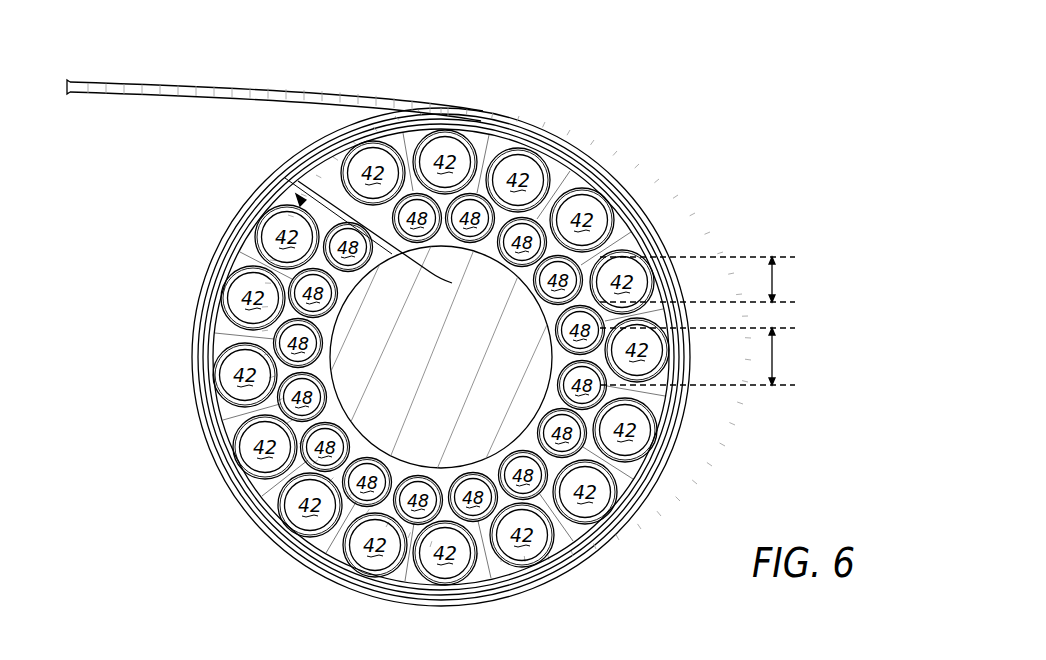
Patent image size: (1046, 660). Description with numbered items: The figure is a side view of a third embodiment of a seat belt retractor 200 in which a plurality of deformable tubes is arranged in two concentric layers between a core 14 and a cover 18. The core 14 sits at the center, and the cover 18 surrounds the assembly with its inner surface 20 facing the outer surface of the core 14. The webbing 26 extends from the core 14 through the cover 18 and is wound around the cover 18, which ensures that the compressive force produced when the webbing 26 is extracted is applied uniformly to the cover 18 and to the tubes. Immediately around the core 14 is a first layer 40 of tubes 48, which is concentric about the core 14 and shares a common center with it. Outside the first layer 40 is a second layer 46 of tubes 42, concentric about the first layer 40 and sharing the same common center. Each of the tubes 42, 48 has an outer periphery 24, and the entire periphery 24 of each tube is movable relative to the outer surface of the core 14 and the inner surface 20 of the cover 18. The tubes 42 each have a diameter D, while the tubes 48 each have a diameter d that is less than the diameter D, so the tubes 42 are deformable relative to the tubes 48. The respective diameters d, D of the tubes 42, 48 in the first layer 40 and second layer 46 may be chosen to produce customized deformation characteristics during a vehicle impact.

The seat belt retractor 200 is at (748, 97).
The core 14 is at (432, 368).
The cover 18 is at (367, 131).
The inner surface 20 is at (393, 136).
The outer periphery 24 is at (343, 165).
The webbing 26 is at (148, 85).
The first layer 40 is at (388, 238).
The tubes 42 is at (441, 357).
The second layer 46 is at (304, 198).
The tubes 48 is at (440, 359).
The diameter d is at (697, 279).
The diameter D is at (697, 356).